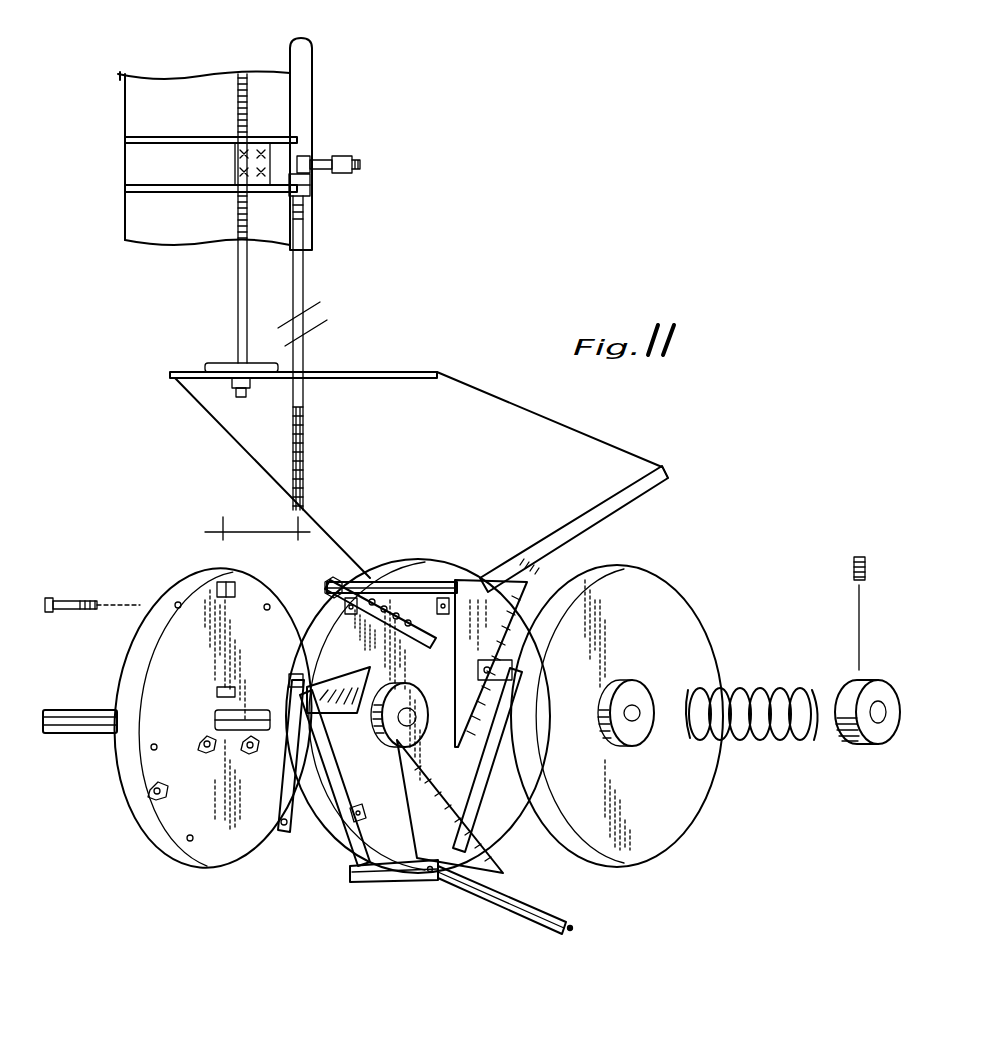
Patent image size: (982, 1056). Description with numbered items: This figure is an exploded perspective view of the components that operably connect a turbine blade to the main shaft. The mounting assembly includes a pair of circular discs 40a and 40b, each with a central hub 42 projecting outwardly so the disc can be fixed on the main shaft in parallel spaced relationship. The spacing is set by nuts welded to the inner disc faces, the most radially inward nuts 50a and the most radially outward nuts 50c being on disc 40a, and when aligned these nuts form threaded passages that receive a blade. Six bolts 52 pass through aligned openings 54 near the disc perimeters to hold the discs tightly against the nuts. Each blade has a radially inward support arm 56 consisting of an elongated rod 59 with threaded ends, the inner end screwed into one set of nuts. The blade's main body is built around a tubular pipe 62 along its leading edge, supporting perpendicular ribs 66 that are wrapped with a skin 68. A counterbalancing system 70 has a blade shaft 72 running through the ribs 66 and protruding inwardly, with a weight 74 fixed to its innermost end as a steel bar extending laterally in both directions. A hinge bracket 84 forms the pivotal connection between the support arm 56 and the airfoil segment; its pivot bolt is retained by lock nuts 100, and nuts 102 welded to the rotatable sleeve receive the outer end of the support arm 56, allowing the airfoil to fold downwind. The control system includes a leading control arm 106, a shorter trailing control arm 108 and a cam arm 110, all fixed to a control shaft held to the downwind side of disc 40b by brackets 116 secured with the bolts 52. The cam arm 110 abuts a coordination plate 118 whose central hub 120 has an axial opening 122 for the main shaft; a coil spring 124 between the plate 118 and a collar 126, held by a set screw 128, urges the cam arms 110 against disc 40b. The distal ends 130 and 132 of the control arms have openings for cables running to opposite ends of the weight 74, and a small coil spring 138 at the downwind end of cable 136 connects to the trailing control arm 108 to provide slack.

The circular disc 40a is at (167, 813).
The circular disc 40b is at (477, 790).
The central hub 42 is at (372, 730).
The nut 50a is at (200, 736).
The nut 50c is at (217, 590).
The bolt 52 is at (47, 596).
The aligned opening 54 is at (268, 603).
The support arm 56 is at (300, 345).
The elongated rod 59 is at (305, 432).
The tubular pipe 62 is at (300, 90).
The rib 66 is at (147, 144).
The skin 68 is at (168, 223).
The counterbalancing system 70 is at (186, 347).
The blade shaft 72 is at (238, 272).
The weight 74 is at (217, 362).
The hinge bracket 84 is at (357, 117).
The lock nut 100 is at (360, 165).
The nut 102 is at (310, 188).
The leading control arm 106 is at (518, 548).
The trailing control arm 108 is at (553, 578).
The cam arm 110 is at (360, 666).
The bracket 116 is at (371, 795).
The coordination plate 118 is at (665, 820).
The central hub 120 is at (625, 692).
The axial opening 122 is at (634, 714).
The coil spring 124 is at (770, 740).
The collar 126 is at (858, 745).
The set screw 128 is at (878, 527).
The distal end 130 is at (650, 490).
The distal end 132 is at (446, 582).
The cable 136 is at (318, 523).
The small coil spring 138 is at (411, 588).